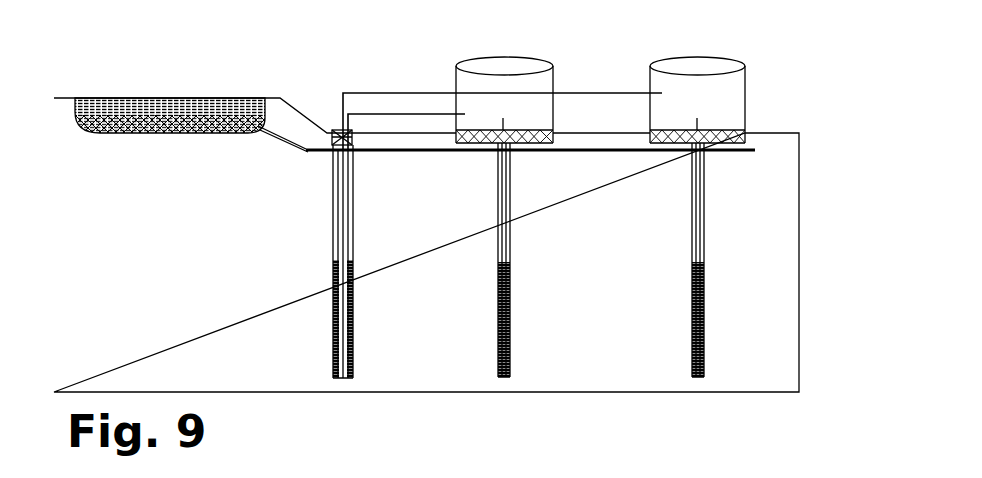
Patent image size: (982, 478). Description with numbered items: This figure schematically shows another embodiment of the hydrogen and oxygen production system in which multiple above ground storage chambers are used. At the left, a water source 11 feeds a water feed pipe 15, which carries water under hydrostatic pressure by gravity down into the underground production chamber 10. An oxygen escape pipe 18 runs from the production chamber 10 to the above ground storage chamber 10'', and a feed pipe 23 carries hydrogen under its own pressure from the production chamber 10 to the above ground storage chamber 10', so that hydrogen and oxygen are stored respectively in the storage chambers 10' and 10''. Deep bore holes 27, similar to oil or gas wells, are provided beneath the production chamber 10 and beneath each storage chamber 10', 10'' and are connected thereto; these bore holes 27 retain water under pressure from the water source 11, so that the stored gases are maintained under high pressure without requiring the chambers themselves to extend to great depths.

The production chamber 10 is at (298, 254).
The storage chamber 10' is at (539, 80).
The storage chamber 10'' is at (742, 100).
The water source 11 is at (130, 98).
The water feed pipe 15 is at (288, 143).
The oxygen escape pipe 18 is at (407, 93).
The feed pipe 23 is at (384, 116).
The bore hole 27 is at (510, 330).